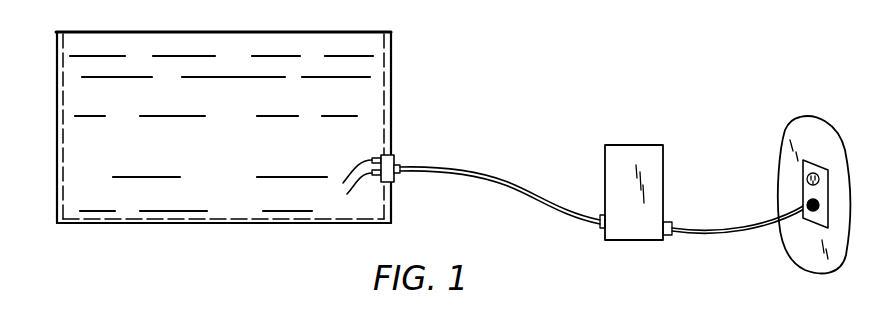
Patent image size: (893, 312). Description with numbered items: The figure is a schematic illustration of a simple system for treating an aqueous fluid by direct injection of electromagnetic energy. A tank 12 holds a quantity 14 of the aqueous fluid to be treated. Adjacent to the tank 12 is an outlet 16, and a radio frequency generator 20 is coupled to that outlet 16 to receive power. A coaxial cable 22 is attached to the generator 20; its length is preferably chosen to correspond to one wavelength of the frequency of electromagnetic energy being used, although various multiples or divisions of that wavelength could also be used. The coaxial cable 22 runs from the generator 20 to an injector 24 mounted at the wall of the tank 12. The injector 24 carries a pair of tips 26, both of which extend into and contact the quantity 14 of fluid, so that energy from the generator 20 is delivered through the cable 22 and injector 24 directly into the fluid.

The tank 12 is at (57, 73).
The quantity of aqueous fluid 14 is at (268, 158).
The outlet 16 is at (806, 192).
The radio frequency generator 20 is at (632, 138).
The coaxial cable 22 is at (465, 172).
The injector 24 is at (396, 155).
The tips 26 is at (352, 181).